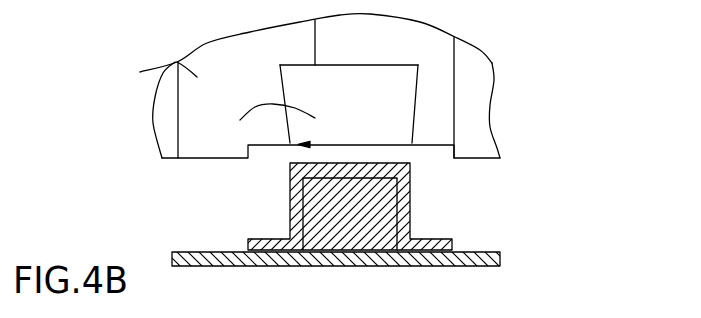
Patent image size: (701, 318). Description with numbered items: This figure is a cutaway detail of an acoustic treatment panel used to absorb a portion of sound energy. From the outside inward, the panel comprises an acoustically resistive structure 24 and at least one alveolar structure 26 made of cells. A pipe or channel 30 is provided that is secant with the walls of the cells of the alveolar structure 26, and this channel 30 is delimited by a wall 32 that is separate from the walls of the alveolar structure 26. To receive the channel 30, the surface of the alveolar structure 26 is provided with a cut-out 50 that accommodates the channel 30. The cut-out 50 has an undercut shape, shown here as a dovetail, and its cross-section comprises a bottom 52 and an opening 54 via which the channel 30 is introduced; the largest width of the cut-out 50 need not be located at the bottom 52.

The acoustically resistive structure 24 is at (398, 266).
The alveolar structure 26 is at (177, 62).
The channel 30 is at (350, 214).
The wall 32 is at (290, 193).
The cut-out 50 is at (263, 107).
The bottom 52 is at (398, 65).
The opening 54 is at (390, 145).